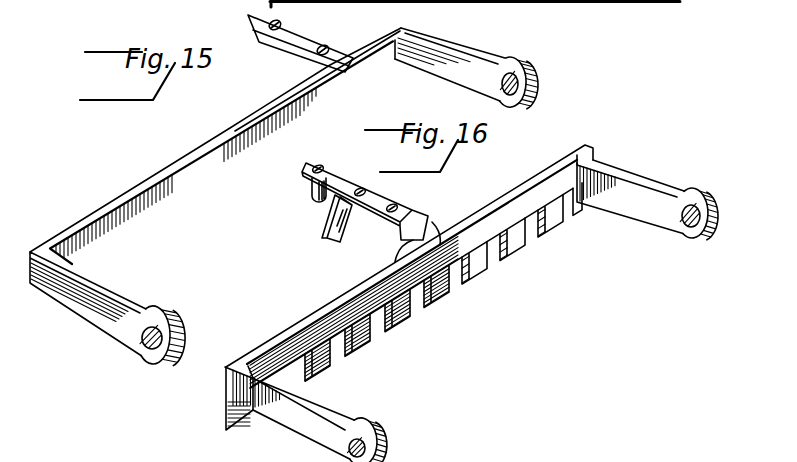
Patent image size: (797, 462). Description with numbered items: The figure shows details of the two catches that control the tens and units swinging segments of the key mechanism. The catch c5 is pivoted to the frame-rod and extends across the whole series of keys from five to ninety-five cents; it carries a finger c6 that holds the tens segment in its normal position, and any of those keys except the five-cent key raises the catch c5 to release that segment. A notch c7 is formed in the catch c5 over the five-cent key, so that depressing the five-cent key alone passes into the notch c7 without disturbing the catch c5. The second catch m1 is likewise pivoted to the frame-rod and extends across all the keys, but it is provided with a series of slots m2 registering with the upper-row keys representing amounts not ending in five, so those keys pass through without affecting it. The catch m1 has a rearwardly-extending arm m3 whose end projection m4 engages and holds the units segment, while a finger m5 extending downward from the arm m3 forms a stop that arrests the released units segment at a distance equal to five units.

In FIG. 15, the catch c5 is at (203, 175).
In FIG. 15, the finger c6 is at (300, 48).
In FIG. 15, the notch c7 is at (395, 59).
In FIG. 16, the catch m1 is at (557, 240).
In FIG. 16, the slots m2 is at (492, 252).
In FIG. 16, the rearwardly-extending arm m3 is at (382, 205).
In FIG. 16, the projection m4 is at (310, 183).
In FIG. 16, the finger m5 is at (328, 229).